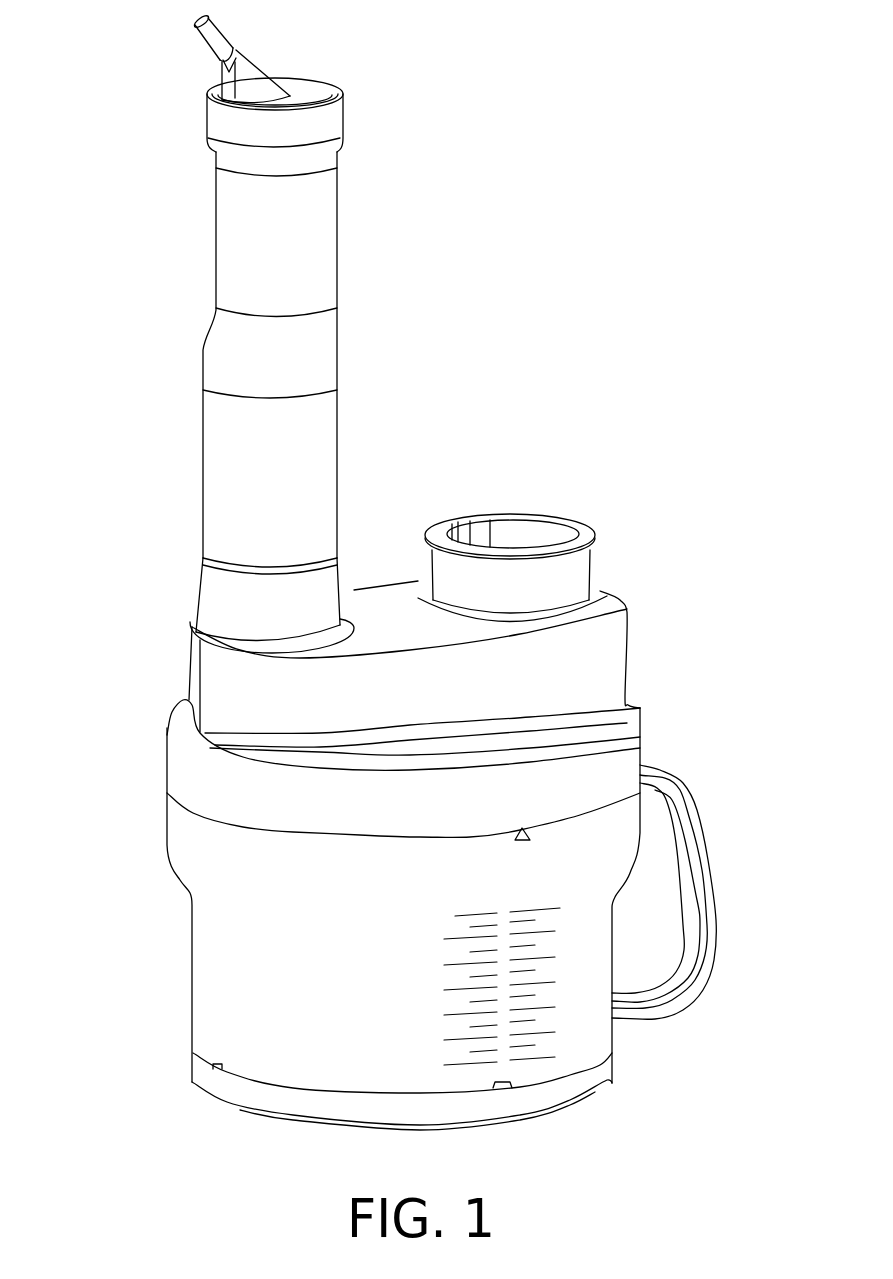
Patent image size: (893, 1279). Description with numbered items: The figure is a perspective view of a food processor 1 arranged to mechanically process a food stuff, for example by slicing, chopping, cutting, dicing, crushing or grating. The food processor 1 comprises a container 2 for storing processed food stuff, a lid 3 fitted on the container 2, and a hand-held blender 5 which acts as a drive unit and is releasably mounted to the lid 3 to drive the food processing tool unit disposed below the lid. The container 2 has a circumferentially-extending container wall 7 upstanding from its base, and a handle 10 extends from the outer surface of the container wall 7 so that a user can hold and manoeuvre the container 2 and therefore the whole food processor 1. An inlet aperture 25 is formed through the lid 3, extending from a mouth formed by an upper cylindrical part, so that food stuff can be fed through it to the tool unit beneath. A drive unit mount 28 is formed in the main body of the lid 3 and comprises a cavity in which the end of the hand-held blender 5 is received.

The food processor 1 is at (546, 163).
The hand-held blender 5 is at (222, 452).
The drive unit mount 28 is at (222, 596).
The lid 3 is at (192, 766).
The inlet aperture 25 is at (600, 537).
The container 2 is at (232, 945).
The container wall 7 is at (192, 1019).
The handle 10 is at (700, 912).